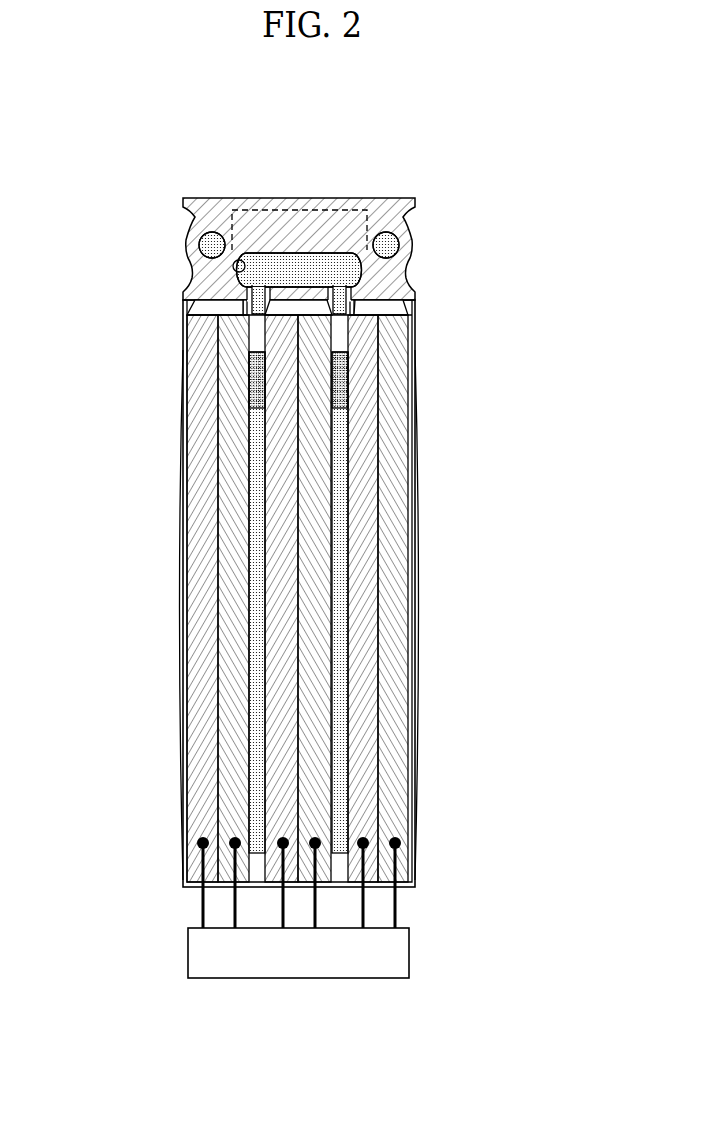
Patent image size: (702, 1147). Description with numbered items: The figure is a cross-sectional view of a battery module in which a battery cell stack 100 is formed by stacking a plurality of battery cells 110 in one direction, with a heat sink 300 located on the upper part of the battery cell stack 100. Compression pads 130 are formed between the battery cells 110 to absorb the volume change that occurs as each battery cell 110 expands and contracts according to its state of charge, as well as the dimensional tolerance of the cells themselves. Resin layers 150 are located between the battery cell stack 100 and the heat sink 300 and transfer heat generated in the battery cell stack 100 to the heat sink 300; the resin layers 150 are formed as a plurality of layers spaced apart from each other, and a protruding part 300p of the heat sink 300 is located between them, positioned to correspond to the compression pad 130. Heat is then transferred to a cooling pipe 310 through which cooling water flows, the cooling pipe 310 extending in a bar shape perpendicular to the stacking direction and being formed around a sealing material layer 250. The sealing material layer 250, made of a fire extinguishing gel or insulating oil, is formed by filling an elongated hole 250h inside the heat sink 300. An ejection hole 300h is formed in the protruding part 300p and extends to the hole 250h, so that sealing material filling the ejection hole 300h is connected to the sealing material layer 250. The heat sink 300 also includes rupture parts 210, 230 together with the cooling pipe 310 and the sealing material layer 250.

The battery cell stack 100 is at (425, 530).
The battery cell 110 is at (395, 597).
The compression pad 130 is at (340, 658).
The resin layer 150 is at (213, 308).
The rupture part 210 is at (257, 330).
The rupture part 230 is at (252, 208).
The sealing material layer 250 is at (318, 210).
The hole 250h is at (236, 268).
The heat sink 300 is at (390, 280).
The ejection hole 300h is at (244, 290).
The protruding part 300p is at (352, 306).
The cooling pipe 310 is at (387, 247).